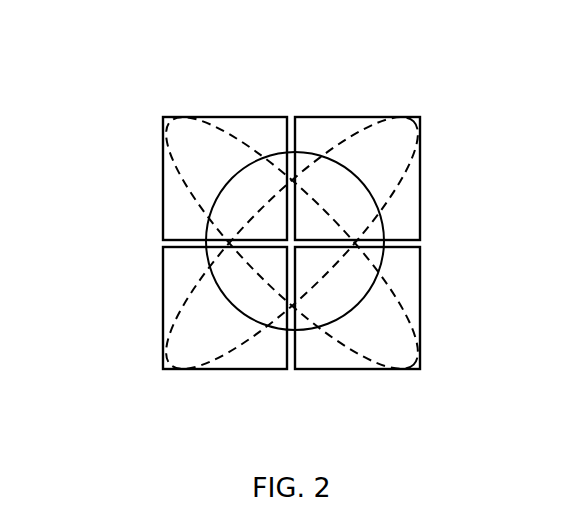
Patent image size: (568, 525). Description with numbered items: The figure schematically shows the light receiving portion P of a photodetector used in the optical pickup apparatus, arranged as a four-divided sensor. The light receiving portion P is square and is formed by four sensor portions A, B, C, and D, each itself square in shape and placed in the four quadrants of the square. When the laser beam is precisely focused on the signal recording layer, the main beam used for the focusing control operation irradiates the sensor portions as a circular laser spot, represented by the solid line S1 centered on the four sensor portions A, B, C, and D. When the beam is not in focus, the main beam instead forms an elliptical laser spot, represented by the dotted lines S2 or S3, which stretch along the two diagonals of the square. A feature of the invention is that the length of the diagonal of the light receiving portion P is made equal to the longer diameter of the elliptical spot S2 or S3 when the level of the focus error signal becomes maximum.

The light receiving portion P is at (272, 225).
The sensor portion A is at (258, 134).
The sensor portion B is at (332, 132).
The sensor portion C is at (410, 290).
The sensor portion D is at (269, 357).
The circular laser spot S1 is at (385, 227).
The elliptical laser spot S2 is at (210, 115).
The elliptical laser spot S3 is at (388, 116).